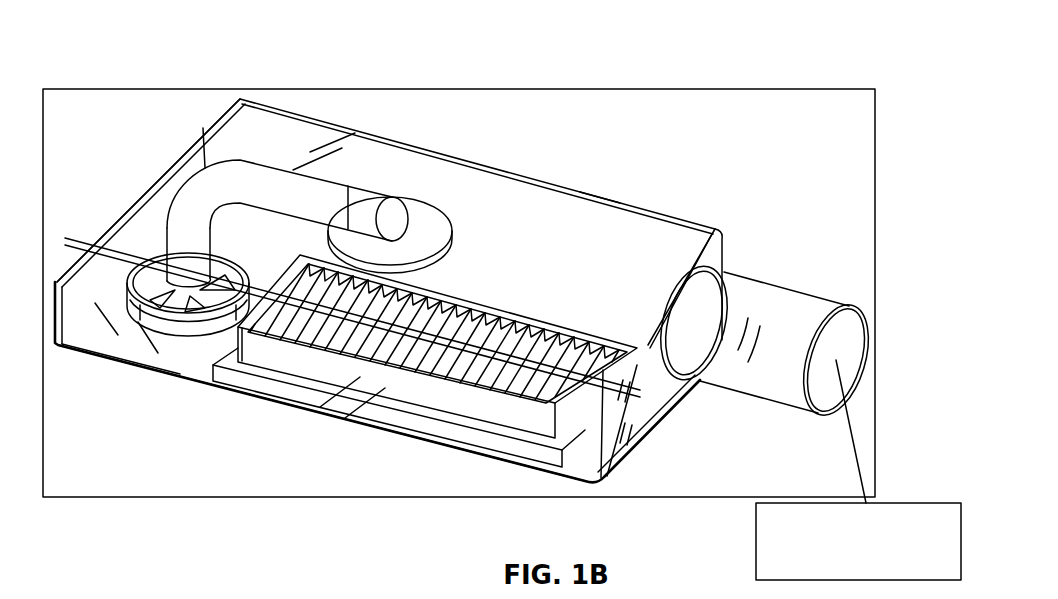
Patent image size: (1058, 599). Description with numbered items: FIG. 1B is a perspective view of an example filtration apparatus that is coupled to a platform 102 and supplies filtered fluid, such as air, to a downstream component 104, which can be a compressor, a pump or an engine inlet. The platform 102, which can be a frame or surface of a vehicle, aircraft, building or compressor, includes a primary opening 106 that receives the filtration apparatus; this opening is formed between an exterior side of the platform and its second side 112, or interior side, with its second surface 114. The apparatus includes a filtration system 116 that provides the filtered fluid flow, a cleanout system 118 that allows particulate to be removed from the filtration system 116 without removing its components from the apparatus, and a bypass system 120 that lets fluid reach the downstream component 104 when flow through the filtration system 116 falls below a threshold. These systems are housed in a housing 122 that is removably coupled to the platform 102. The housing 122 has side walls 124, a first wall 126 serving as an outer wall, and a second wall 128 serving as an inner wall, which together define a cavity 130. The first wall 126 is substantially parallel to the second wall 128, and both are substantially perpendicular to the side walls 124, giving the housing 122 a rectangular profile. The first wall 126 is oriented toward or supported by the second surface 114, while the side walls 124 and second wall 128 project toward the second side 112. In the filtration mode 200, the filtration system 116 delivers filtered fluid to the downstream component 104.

The platform 102 is at (697, 108).
The downstream component 104 is at (893, 503).
The primary opening 106 is at (663, 400).
The second side 112 is at (736, 131).
The second surface 114 is at (215, 472).
The filtration system 116 is at (540, 305).
The cleanout system 118 is at (275, 163).
The bypass system 120 is at (156, 256).
The housing 122 is at (453, 153).
The side walls 124 is at (95, 238).
The first wall 126 is at (137, 368).
The second wall 128 is at (583, 211).
The cavity 130 is at (485, 265).
The filtration mode 200 is at (508, 152).